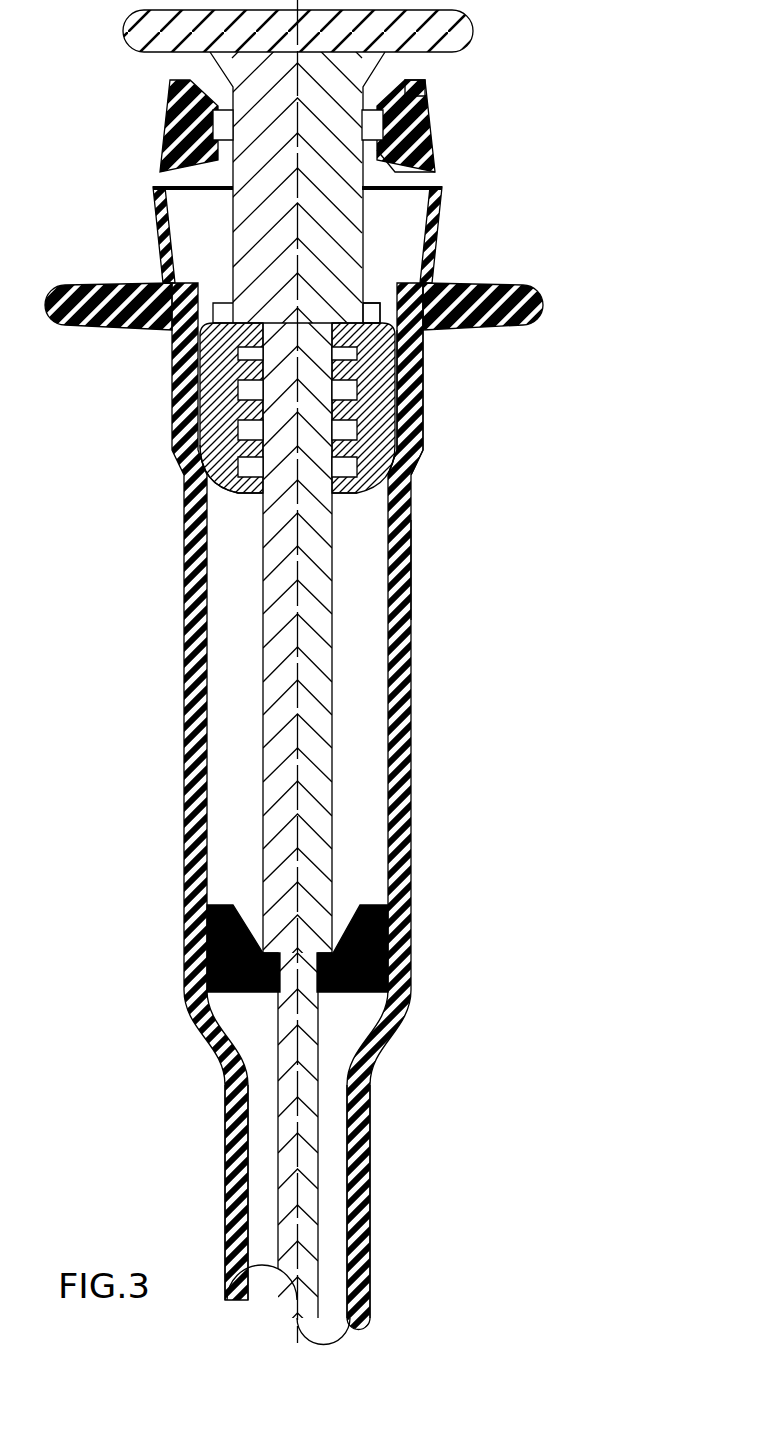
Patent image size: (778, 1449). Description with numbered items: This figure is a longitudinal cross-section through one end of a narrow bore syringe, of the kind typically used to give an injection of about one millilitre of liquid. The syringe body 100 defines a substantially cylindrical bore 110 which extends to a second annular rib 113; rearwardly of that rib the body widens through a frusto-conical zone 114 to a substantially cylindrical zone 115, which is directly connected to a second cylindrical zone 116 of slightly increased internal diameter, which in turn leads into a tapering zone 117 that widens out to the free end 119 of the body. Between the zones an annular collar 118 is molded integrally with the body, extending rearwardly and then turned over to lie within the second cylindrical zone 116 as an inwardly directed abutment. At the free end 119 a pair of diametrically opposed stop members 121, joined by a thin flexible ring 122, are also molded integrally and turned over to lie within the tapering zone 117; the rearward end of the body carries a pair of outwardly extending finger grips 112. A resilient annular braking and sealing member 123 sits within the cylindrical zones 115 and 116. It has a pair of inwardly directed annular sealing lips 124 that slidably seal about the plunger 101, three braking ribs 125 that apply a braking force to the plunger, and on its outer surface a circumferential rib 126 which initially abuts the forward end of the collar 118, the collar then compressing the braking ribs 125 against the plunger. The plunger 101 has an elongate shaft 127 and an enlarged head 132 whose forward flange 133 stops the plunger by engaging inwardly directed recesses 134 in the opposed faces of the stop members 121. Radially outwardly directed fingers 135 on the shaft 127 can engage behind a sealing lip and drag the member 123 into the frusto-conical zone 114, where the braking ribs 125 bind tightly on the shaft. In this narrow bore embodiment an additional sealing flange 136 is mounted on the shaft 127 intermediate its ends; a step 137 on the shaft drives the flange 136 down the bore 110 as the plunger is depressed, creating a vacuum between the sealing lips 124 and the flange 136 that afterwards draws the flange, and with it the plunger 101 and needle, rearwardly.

The body 100 is at (407, 723).
The plunger 101 is at (155, 54).
The cylindrical bore 110 is at (373, 1207).
The finger grips 112 is at (513, 325).
The second annular rib 113 is at (412, 563).
The frusto-conical zone 114 is at (413, 483).
The cylindrical zone 115 is at (427, 433).
The second cylindrical zone 116 is at (427, 332).
The tapering zone 117 is at (412, 232).
The annular collar 118 is at (425, 370).
The free end 119 is at (153, 195).
The stop members 121 is at (160, 157).
The thin flexible ring 122 is at (422, 103).
The braking and sealing member 123 is at (193, 402).
The annular sealing lips 124 is at (248, 484).
The braking ribs 125 is at (173, 370).
The circumferential rib 126 is at (183, 447).
The shaft 127 is at (288, 1188).
The enlarged head 132 is at (126, 40).
The flange 133 is at (376, 310).
The recesses 134 is at (433, 168).
The fingers 135 is at (253, 882).
The additional sealing flange 136 is at (188, 955).
The step 137 is at (326, 948).